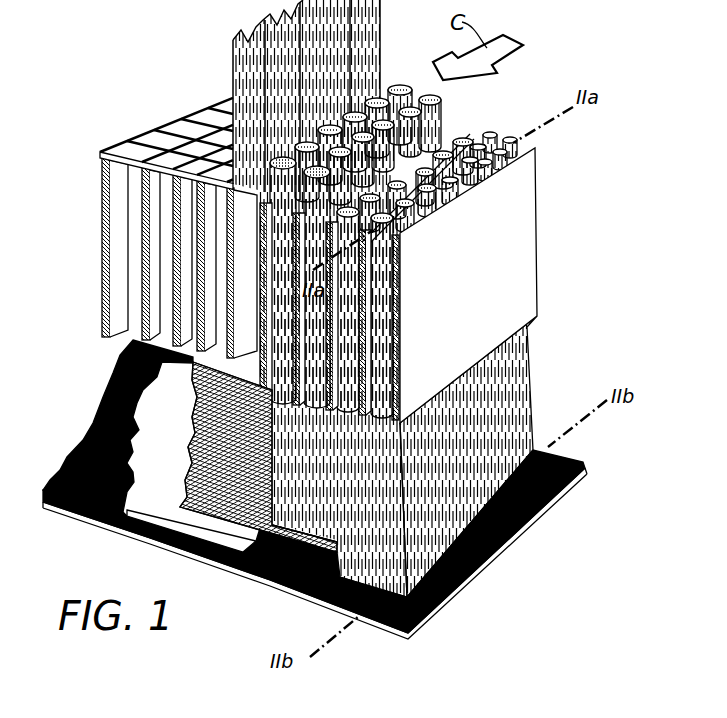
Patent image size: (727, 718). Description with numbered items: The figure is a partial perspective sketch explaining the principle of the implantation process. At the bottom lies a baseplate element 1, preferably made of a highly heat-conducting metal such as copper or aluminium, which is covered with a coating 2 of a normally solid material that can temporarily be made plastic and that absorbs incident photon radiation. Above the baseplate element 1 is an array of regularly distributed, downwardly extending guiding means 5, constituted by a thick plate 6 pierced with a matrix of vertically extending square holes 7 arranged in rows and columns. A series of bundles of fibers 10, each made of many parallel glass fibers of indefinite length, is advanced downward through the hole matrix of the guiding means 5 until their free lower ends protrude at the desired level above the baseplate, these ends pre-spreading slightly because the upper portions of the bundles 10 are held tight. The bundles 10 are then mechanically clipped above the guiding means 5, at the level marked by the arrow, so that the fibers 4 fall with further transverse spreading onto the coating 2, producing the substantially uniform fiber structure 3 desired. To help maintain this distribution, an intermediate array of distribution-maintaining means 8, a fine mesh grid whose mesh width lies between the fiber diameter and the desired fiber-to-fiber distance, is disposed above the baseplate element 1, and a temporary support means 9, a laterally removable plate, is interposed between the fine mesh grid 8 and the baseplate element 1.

The baseplate element 1 is at (523, 530).
The coating 2 is at (470, 573).
The fiber structure 3 is at (535, 356).
The fibers 4 is at (502, 145).
The guiding means 5 is at (510, 285).
The thick plate 6 is at (545, 263).
The square holes 7 is at (197, 127).
The distribution-maintaining means 8 is at (207, 437).
The temporary support means 9 is at (165, 477).
The bundles of fibers 10 is at (277, 90).